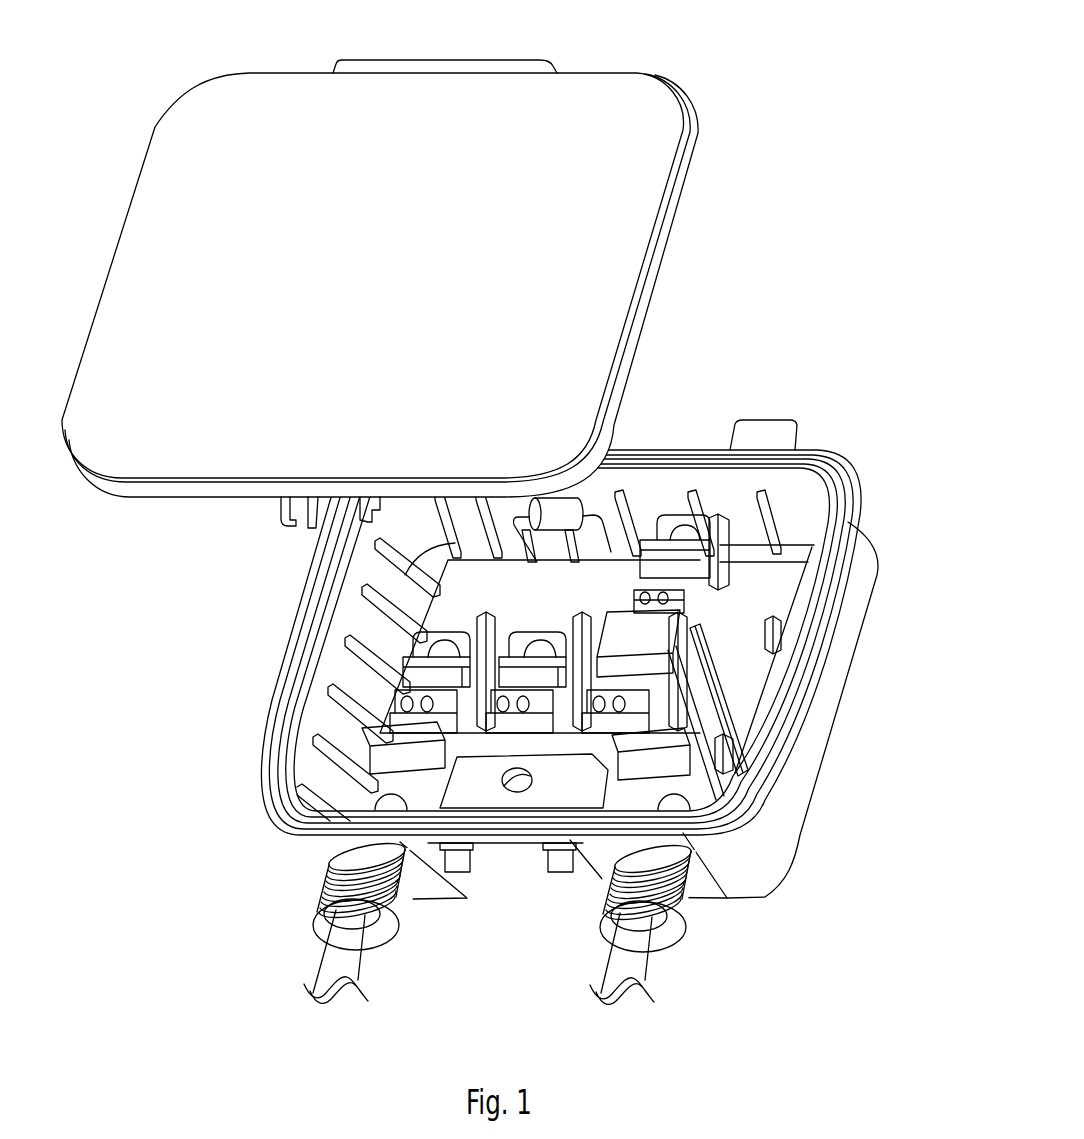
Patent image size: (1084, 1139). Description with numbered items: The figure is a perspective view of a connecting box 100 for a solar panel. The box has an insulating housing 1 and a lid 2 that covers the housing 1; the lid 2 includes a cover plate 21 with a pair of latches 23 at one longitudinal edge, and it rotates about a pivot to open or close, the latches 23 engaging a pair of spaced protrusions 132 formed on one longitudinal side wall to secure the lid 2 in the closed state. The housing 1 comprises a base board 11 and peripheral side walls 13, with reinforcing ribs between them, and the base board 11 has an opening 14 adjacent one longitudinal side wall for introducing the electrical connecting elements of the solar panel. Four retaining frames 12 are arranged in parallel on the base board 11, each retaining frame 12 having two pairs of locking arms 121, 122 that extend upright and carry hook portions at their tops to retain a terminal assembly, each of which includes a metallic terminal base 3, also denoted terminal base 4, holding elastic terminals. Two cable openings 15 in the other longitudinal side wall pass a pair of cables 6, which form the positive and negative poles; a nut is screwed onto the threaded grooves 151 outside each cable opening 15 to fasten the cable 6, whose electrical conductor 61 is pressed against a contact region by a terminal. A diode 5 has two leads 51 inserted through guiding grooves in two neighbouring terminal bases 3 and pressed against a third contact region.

The connecting box 100 is at (918, 35).
The insulating housing 1 is at (245, 808).
The lid 2 is at (703, 99).
The cover plate 21 is at (183, 170).
The latches 23 is at (355, 535).
The base board 11 is at (432, 570).
The retaining frame 12 is at (707, 718).
The locking arm 121 is at (780, 632).
The locking arm 122 is at (730, 762).
The side walls 13 is at (780, 805).
The opening 14 is at (476, 598).
The cable opening 15 is at (330, 918).
The threaded grooves 151 is at (325, 877).
The protrusions 132 is at (562, 871).
The terminal base 3 is at (723, 545).
The terminal base 4 is at (687, 518).
The diode 5 is at (576, 490).
The leads 51 is at (597, 517).
The cable 6 is at (655, 940).
The electrical conductor 61 is at (685, 802).